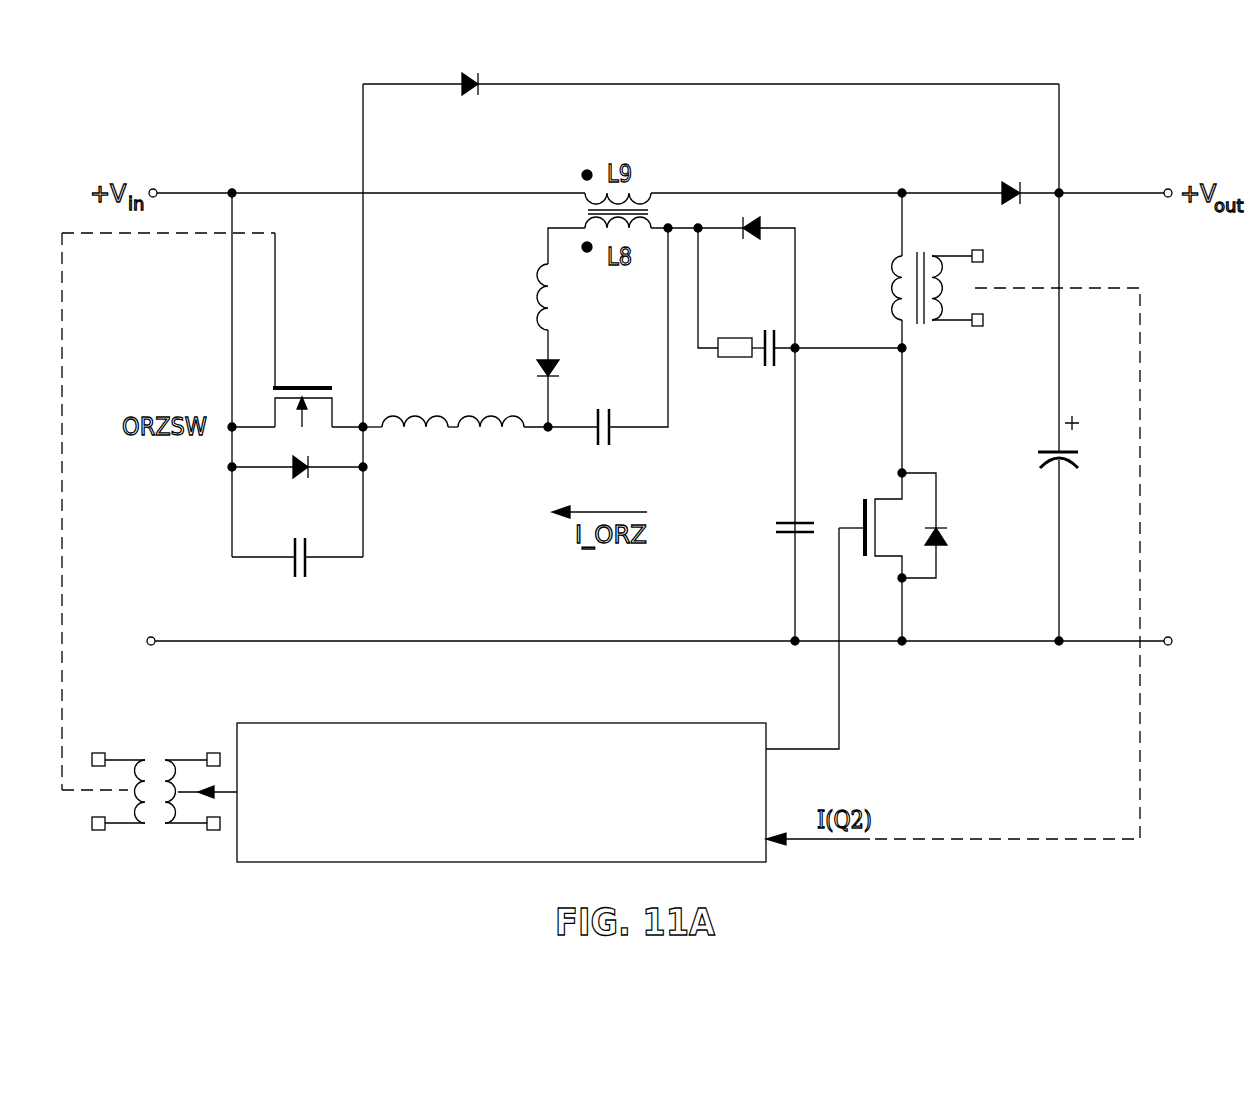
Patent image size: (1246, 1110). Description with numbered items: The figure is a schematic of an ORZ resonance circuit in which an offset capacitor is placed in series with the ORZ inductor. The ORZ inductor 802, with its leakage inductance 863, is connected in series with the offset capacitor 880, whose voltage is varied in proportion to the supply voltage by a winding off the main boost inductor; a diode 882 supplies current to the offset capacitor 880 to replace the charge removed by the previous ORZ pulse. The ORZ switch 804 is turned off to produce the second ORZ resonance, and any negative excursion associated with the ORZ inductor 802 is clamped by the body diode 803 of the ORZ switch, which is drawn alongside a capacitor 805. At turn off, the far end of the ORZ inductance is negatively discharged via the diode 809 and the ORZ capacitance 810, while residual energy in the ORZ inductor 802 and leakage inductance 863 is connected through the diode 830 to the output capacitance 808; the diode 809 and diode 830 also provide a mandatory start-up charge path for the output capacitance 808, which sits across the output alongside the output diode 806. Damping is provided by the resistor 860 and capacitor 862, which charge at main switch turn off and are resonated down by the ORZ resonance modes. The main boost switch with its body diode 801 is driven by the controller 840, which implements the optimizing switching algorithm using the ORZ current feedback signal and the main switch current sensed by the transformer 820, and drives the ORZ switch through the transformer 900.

The body diode of main switch Q2 801 is at (940, 527).
The ORZ inductor 802 is at (400, 434).
The body diode of the ORZ switch 803 is at (295, 478).
The ORZ switch 804 is at (313, 386).
The capacitor across ORZ switch 805 is at (305, 576).
The output diode D2 806 is at (1012, 200).
The output capacitance 808 is at (1075, 452).
The diode 809 is at (755, 236).
The ORZ capacitance 810 is at (805, 522).
The current sensing transformer 820 is at (918, 325).
The diode 830 is at (478, 73).
The controller 840 is at (430, 723).
The resistor 860 is at (766, 367).
The capacitor 862 is at (723, 358).
The leakage inductance Le_ORZ 863 is at (512, 417).
The offset capacitor C_offset 880 is at (608, 446).
The diode 882 is at (552, 358).
The gate drive transformer 900 is at (155, 763).